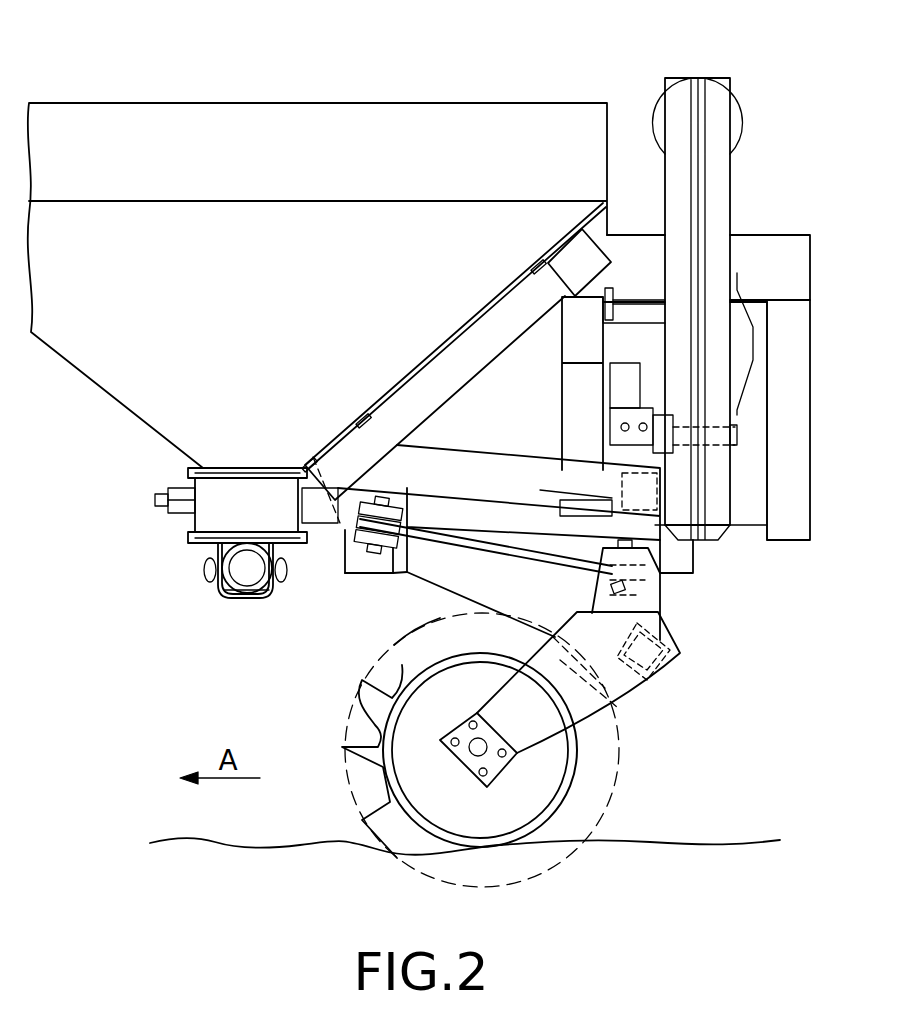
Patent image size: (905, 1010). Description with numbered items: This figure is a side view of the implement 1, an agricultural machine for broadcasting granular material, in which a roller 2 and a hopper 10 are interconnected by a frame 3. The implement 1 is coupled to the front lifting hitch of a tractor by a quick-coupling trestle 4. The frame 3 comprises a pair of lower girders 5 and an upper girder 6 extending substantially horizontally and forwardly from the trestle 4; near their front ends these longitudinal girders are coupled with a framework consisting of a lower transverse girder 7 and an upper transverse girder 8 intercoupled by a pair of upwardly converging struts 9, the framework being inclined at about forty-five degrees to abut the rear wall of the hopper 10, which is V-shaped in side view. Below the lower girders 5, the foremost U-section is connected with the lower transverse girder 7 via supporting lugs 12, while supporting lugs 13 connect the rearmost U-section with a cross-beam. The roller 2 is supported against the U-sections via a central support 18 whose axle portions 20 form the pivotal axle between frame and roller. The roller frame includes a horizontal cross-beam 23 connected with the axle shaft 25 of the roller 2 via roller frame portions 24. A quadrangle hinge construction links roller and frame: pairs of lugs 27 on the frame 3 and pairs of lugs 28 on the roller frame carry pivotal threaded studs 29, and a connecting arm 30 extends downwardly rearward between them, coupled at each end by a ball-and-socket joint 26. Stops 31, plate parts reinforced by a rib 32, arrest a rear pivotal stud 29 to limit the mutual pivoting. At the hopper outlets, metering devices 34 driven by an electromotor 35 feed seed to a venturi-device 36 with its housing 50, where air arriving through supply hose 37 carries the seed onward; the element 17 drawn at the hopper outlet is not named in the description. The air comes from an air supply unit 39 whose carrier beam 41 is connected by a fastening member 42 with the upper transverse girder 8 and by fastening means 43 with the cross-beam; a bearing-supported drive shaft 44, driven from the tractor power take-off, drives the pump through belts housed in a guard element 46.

The implement 1 is at (644, 214).
The roller 2 is at (385, 766).
The frame 3 is at (812, 440).
The trestle 4 is at (812, 322).
The lower girders 5 is at (462, 445).
The upper girder 6 is at (788, 240).
The lower transverse girder 7 is at (340, 437).
The upper transverse girder 8 is at (555, 250).
The struts 9 is at (470, 330).
The hopper 10 is at (312, 100).
The supporting lugs 12 is at (350, 573).
The supporting lugs 13 is at (693, 572).
The metering box 17 is at (235, 466).
The central support 18 is at (510, 600).
The axle portions 20 is at (578, 666).
The cross-beam 23 is at (680, 655).
The roller frame portions 24 is at (490, 690).
The axle shaft 25 is at (480, 755).
The ball-and-socket joint 26 is at (398, 525).
The lugs 27 is at (383, 515).
The lugs 28 is at (655, 585).
The pivotal threaded studs 29 is at (397, 578).
The connecting arm 30 is at (520, 560).
The stops 31 is at (545, 490).
The rib 32 is at (595, 493).
The metering devices 34 is at (195, 520).
The electromotor 35 is at (315, 517).
The venturi-device 36 is at (218, 597).
The supply hose 37 is at (247, 592).
The air supply unit 39 is at (733, 176).
The carrier beam 41 is at (610, 390).
The fastening member 42 is at (612, 292).
The fastening means 43 is at (612, 430).
The drive shaft 44 is at (737, 440).
The guard element 46 is at (568, 383).
The housing 50 is at (268, 592).